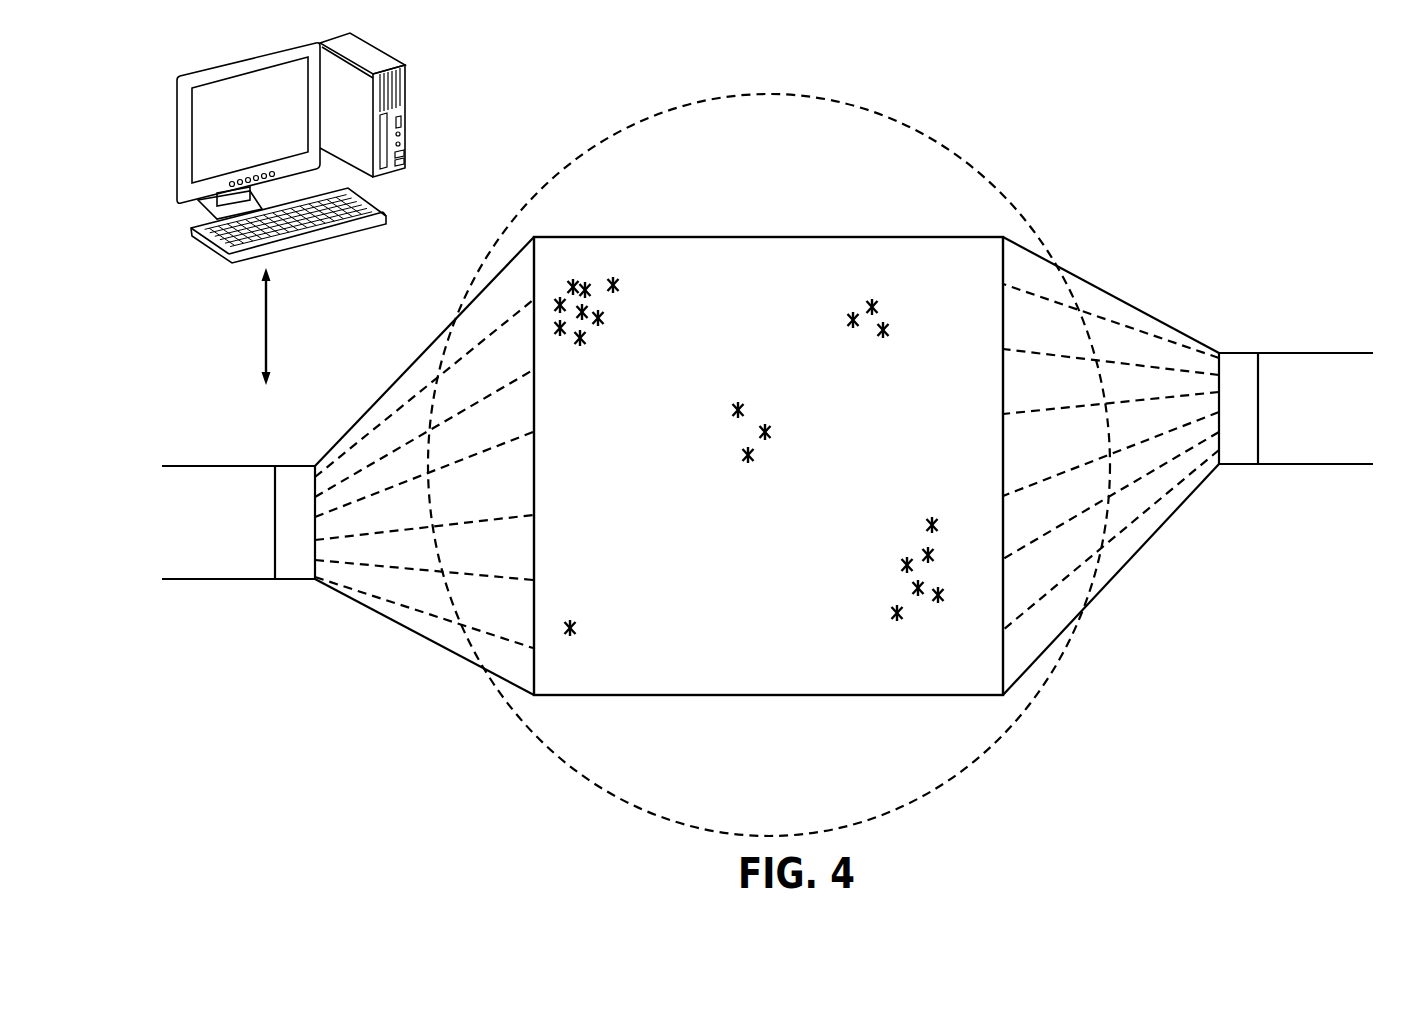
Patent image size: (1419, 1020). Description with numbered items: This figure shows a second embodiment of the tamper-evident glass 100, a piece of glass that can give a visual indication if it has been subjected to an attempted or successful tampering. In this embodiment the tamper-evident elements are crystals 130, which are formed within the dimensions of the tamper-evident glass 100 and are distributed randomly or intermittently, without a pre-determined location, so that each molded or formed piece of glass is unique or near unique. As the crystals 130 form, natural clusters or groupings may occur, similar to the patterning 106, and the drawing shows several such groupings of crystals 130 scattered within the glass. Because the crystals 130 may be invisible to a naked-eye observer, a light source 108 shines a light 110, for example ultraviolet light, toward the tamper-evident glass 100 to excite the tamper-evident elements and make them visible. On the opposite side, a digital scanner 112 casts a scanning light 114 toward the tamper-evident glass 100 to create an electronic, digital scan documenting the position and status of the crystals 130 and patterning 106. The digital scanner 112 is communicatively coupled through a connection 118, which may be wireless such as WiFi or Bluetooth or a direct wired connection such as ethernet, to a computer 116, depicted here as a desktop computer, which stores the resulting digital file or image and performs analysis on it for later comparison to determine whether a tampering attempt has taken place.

The tamper-evident glass 100 is at (1116, 128).
The patterning 106 is at (551, 271).
The light source 108 is at (1295, 442).
The light 110 is at (1134, 341).
The digital scanner 112 is at (228, 556).
The scanning light 114 is at (412, 544).
The computer 116 is at (406, 108).
The connection 118 is at (266, 335).
The crystals 130 is at (578, 285).